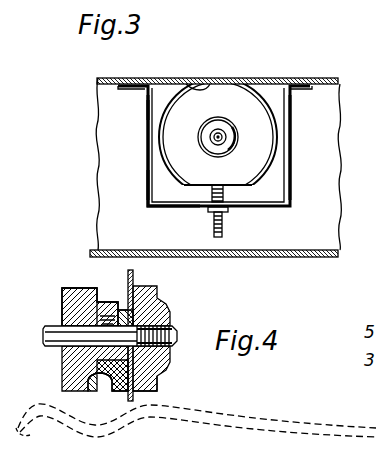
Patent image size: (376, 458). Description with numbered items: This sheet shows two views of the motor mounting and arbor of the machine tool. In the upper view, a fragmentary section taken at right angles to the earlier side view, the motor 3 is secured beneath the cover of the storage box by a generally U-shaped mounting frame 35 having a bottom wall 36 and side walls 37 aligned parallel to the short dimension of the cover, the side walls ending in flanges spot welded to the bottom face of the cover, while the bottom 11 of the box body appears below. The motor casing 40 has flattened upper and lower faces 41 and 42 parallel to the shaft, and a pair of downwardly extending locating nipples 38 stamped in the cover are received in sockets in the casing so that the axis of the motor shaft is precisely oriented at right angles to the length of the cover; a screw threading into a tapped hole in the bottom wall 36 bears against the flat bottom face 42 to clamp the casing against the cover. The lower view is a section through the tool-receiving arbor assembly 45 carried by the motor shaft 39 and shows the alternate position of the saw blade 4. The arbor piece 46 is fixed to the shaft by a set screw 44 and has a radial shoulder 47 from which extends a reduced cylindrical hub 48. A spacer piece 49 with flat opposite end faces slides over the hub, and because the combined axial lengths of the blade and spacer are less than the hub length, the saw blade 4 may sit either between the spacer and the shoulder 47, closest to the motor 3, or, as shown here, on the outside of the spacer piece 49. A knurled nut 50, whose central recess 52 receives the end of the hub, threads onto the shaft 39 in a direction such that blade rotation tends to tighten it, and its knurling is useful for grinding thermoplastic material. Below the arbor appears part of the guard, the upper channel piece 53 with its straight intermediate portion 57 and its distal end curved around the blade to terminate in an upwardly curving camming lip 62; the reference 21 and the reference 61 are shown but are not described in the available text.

In FIG. 3, the motor 3 is at (147, 110).
In FIG. 4, the saw blade 4 is at (134, 272).
In FIG. 3, the bottom 11 is at (305, 258).
In FIG. 3, the top plate 21 is at (105, 79).
In FIG. 3, the mounting frame 35 is at (147, 185).
In FIG. 3, the bottom wall 36 is at (163, 206).
In FIG. 3, the side walls 37 is at (147, 139).
In FIG. 3, the locating nipples 38 is at (219, 82).
In FIG. 4, the motor shaft 39 is at (48, 340).
In FIG. 3, the motor casing 40 is at (236, 92).
In FIG. 3, the flattened upper face 41 is at (196, 82).
In FIG. 3, the flattened lower face 42 is at (236, 192).
In FIG. 4, the set screw 44 is at (62, 319).
In FIG. 4, the tool-receiving arbor assembly 45 is at (76, 291).
In FIG. 4, the arbor piece 46 is at (170, 356).
In FIG. 4, the radial shoulder 47 is at (100, 388).
In FIG. 4, the arbor hub 48 is at (160, 288).
In FIG. 4, the spacer piece 49 is at (62, 299).
In FIG. 4, the knurled nut 50 is at (168, 378).
In FIG. 4, the central recess 52 is at (170, 308).
In FIG. 4, the upper channel piece 53 is at (240, 434).
In FIG. 4, the straight intermediate portion 57 is at (320, 435).
In FIG. 4, the upper dashed contour 61 is at (100, 434).
In FIG. 4, the camming lip 62 is at (38, 432).